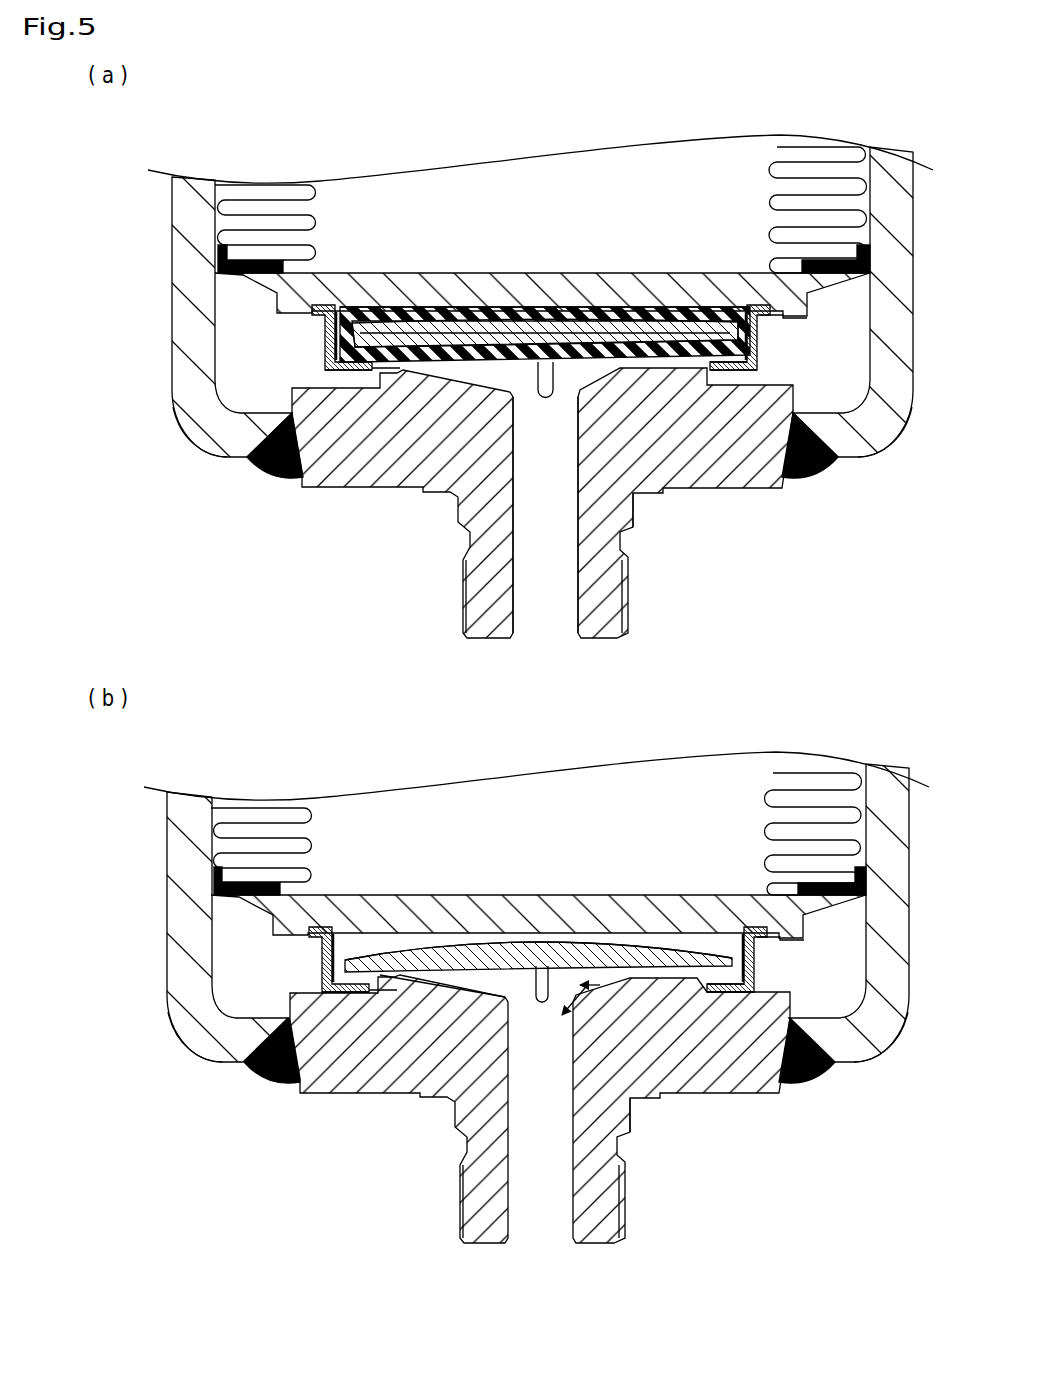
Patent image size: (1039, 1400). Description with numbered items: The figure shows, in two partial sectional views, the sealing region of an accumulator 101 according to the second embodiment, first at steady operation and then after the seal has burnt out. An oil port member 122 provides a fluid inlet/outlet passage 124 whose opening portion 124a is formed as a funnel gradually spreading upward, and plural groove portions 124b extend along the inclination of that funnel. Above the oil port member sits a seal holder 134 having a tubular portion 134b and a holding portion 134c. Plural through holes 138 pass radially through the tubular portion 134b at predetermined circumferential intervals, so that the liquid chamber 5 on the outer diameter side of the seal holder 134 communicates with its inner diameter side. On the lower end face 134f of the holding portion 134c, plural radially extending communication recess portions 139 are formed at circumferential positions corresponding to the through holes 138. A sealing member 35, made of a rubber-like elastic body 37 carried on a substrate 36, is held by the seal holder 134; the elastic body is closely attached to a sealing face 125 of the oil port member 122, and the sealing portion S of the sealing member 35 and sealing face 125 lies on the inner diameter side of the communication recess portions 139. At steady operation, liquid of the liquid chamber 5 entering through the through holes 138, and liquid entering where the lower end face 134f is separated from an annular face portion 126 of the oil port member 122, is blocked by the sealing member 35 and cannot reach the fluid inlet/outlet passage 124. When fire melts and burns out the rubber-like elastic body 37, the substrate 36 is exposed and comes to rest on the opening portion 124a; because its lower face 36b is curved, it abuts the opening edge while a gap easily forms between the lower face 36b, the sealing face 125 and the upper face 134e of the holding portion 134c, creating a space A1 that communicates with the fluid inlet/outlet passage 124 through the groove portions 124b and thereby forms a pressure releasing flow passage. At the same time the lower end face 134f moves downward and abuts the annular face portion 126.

The accumulator 101 is at (150, 262).
The liquid chamber 5 is at (255, 372).
The substrate 36 is at (444, 314).
The groove portions 124b is at (487, 355).
The opening portion 124a is at (585, 340).
The sealing portion S is at (692, 308).
The through holes 138 is at (327, 343).
The tubular portion 134b is at (763, 320).
The seal holder 134 is at (777, 365).
The lower end face 134f is at (830, 445).
The sealing member 35 is at (563, 373).
The rubber-like elastic body 37 is at (527, 374).
The communication recess portions 139 is at (337, 369).
The annular face portion 126 is at (358, 376).
The sealing face 125 is at (405, 378).
The holding portion 134c is at (725, 370).
The oil port member 122 is at (660, 506).
The fluid inlet/outlet passage 124 is at (551, 608).
The upper face 134e is at (733, 968).
The lower face 36b is at (380, 975).
The space A1 is at (683, 984).